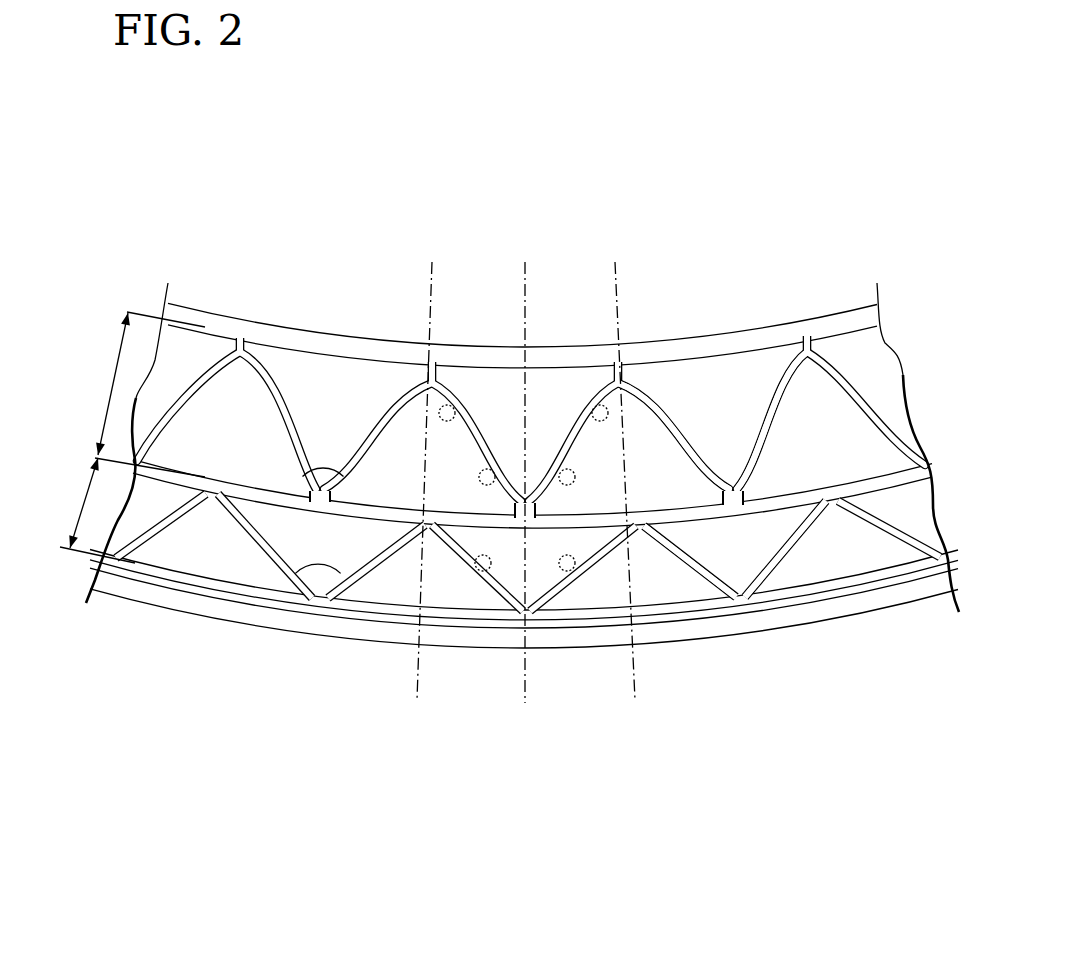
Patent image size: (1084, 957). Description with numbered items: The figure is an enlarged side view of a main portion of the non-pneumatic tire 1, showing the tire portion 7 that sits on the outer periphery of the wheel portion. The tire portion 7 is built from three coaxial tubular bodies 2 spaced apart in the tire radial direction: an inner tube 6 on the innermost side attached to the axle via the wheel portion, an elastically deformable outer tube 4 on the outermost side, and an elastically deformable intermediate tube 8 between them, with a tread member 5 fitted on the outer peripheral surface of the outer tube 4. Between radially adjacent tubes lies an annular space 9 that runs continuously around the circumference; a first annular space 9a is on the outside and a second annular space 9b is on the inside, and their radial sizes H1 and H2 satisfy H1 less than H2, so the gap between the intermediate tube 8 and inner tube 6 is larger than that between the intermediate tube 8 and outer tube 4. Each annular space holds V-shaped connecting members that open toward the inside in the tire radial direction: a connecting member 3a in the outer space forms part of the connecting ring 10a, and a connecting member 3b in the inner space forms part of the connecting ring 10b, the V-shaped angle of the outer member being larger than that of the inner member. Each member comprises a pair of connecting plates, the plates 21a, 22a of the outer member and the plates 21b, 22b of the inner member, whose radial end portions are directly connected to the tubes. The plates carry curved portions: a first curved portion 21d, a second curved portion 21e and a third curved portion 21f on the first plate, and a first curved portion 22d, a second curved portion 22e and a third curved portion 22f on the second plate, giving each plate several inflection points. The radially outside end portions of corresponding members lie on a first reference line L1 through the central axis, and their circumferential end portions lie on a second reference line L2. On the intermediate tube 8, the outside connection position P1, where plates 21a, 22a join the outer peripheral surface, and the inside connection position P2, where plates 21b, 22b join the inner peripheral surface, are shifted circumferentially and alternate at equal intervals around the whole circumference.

The non-pneumatic tire 1 is at (841, 119).
The tubular bodies 2 is at (524, 465).
The outer tube 4 is at (212, 591).
The tread member 5 is at (302, 628).
The inner tube 6 is at (254, 322).
The tire portion 7 is at (190, 282).
The intermediate tube 8 is at (156, 487).
The annular space 9 is at (892, 458).
The first annular space 9a is at (912, 530).
The second annular space 9b is at (858, 352).
The connecting ring 10a is at (528, 710).
The connecting ring 10b is at (531, 296).
The connecting member 3a is at (528, 668).
The connecting member 3b is at (531, 333).
The first connecting plate 21a is at (703, 590).
The second connecting plate 22a is at (793, 570).
The first connecting plate 21b is at (668, 395).
The second connecting plate 22b is at (818, 386).
The first curved portion 21d is at (468, 400).
The second curved portion 21e is at (490, 420).
The third curved portion 21f is at (440, 375).
The first curved portion 22d is at (585, 400).
The second curved portion 22e is at (566, 420).
The third curved portion 22f is at (610, 375).
The outside connection position P1 is at (372, 612).
The inside connection position P2 is at (527, 615).
The first reference line L1 is at (520, 707).
The second reference line L2 is at (413, 686).
The size of connecting ring 10a in the tire radial direction H1 is at (88, 510).
The size of connecting ring 10b in the tire radial direction H2 is at (137, 394).